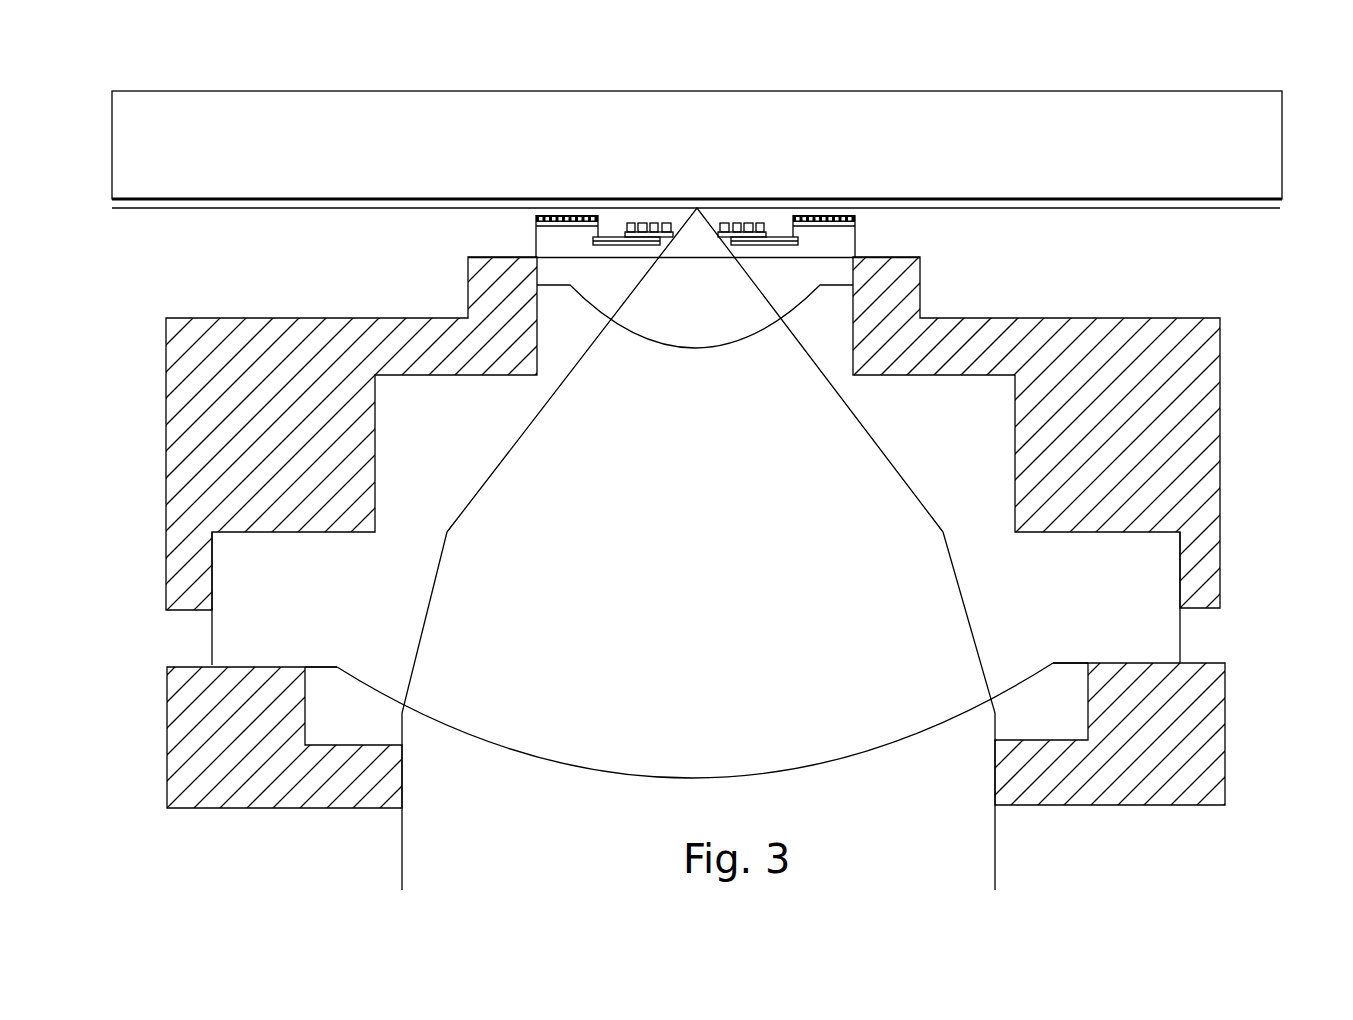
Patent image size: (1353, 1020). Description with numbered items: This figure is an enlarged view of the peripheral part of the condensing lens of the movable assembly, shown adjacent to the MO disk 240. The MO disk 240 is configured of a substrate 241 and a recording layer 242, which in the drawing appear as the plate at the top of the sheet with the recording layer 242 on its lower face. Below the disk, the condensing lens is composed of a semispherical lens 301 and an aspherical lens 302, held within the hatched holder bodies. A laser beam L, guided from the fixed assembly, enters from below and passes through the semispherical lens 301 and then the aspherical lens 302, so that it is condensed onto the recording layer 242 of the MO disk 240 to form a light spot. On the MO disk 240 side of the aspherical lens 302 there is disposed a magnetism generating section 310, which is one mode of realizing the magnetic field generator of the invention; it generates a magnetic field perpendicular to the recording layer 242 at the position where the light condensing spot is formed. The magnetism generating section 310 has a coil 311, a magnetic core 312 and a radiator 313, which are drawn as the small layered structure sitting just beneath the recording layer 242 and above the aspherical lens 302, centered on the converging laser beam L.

The MO disk 240 is at (730, 116).
The substrate 241 is at (1263, 167).
The recording layer 242 is at (1277, 202).
The magnetism generating section 310 is at (710, 207).
The coil 311 is at (775, 232).
The magnetic core 312 is at (800, 239).
The radiator 313 is at (855, 223).
The aspherical lens 302 is at (550, 273).
The semispherical lens 301 is at (232, 638).
The laser beam L is at (960, 858).